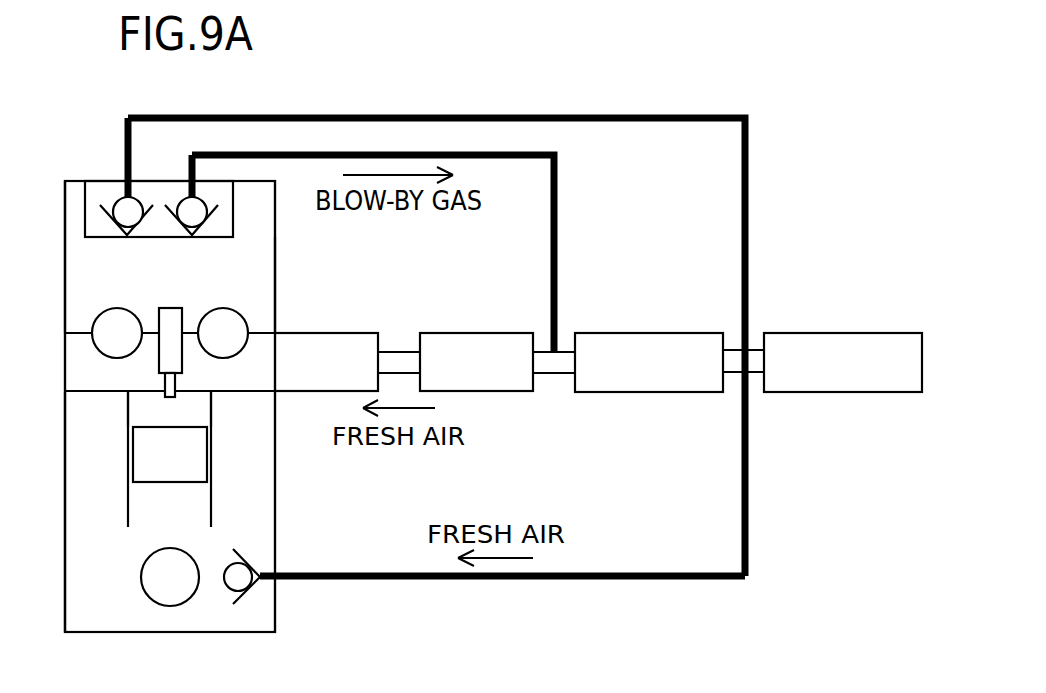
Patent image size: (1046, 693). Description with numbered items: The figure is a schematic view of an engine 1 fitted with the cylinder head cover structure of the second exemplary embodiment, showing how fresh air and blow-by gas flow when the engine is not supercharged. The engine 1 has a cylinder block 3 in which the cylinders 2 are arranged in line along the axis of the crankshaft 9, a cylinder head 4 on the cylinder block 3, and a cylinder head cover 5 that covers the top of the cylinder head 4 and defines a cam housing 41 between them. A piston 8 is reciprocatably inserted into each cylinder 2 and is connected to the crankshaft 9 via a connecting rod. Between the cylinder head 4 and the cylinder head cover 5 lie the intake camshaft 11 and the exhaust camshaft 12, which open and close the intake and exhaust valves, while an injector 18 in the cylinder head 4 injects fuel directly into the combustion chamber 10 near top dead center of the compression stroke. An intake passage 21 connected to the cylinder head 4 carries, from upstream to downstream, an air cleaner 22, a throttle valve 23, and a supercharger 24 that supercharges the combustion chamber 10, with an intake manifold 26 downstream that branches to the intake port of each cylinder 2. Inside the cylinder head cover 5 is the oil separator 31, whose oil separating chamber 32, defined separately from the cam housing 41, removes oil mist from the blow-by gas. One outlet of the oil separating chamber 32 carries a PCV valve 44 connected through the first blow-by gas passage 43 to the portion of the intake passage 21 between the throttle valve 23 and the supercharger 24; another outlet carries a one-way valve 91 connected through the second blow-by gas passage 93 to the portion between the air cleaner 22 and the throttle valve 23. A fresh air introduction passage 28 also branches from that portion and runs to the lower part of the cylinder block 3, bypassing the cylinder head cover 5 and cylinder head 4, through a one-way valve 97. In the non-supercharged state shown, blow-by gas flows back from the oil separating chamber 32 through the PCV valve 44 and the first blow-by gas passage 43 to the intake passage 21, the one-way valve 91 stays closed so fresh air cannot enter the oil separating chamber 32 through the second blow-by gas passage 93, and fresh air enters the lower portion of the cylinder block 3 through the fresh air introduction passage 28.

The engine 1 is at (282, 253).
The cylinder 2 is at (127, 410).
The cylinder block 3 is at (276, 528).
The cylinder head 4 is at (65, 366).
The cylinder head cover 5 is at (65, 277).
The piston 8 is at (190, 456).
The crankshaft 9 is at (140, 578).
The combustion chamber 10 is at (197, 410).
The intake camshaft 11 is at (223, 308).
The exhaust camshaft 12 is at (117, 308).
The injector 18 is at (170, 308).
The intake passage 21 is at (550, 374).
The air cleaner 22 is at (843, 393).
The throttle valve 23 is at (650, 393).
The supercharger 24 is at (497, 392).
The intake manifold 26 is at (352, 333).
The fresh air introduction passage 28 is at (620, 580).
The oil separator 31 is at (237, 210).
The oil separating chamber 32 is at (94, 193).
The cam housing 41 is at (253, 285).
The first blow-by gas passage 43 is at (358, 151).
The PCV valve 44 is at (202, 196).
The one-way valve 91 is at (117, 199).
The second blow-by gas passage 93 is at (527, 114).
The one-way valve 97 is at (232, 592).